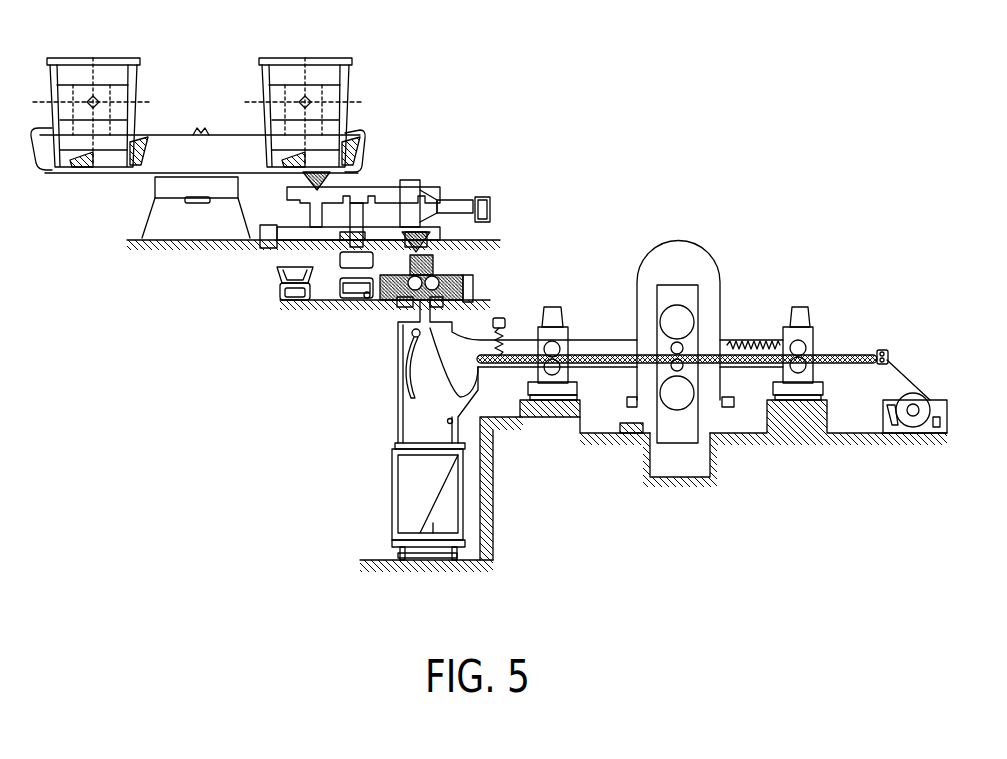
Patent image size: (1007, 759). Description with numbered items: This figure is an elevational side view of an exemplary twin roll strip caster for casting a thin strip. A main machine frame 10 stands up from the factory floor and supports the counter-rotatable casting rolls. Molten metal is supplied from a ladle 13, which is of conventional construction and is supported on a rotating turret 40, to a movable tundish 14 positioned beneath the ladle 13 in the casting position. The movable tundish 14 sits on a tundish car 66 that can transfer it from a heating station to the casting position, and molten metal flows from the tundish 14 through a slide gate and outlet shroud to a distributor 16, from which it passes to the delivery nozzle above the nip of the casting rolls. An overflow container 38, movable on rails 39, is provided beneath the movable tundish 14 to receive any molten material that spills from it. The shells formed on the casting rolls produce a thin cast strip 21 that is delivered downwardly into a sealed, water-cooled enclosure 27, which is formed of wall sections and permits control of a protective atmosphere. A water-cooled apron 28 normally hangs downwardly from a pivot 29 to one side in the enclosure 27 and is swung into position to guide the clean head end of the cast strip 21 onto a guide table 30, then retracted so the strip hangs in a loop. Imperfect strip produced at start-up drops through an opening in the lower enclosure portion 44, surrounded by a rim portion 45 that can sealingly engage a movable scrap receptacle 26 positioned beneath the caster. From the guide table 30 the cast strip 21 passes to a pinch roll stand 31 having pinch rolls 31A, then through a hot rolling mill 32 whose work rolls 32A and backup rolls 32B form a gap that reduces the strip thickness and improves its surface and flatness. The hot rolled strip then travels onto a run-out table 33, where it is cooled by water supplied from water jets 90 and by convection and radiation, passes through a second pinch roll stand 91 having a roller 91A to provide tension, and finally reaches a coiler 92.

The ladle 13 is at (137, 90).
The movable tundish 14 is at (373, 187).
The tundish car 66 is at (441, 184).
The rotating turret 40 is at (140, 225).
The distributor 16 is at (433, 258).
The main machine frame 10 is at (478, 290).
The overflow container 38 is at (275, 275).
The rails 39 is at (280, 298).
The pivot 29 is at (406, 335).
The cast strip 21 is at (430, 360).
The water-cooled apron 28 is at (397, 395).
The sealed enclosure 27 is at (396, 420).
The rim portion 45 is at (394, 451).
The scrap receptacle 26 is at (391, 500).
The lower enclosure portion 44 is at (462, 438).
The guide table 30 is at (498, 368).
The pinch roll stand 31 is at (567, 327).
The pinch rolls 31A is at (560, 348).
The hot rolling mill 32 is at (720, 268).
The work rolls 32A is at (672, 372).
The backup rolls 32B is at (648, 430).
The run-out table 33 is at (748, 368).
The water jets 90 is at (763, 340).
The second pinch roll stand 91 is at (812, 331).
The roller 91A is at (806, 349).
The coiler 92 is at (924, 378).